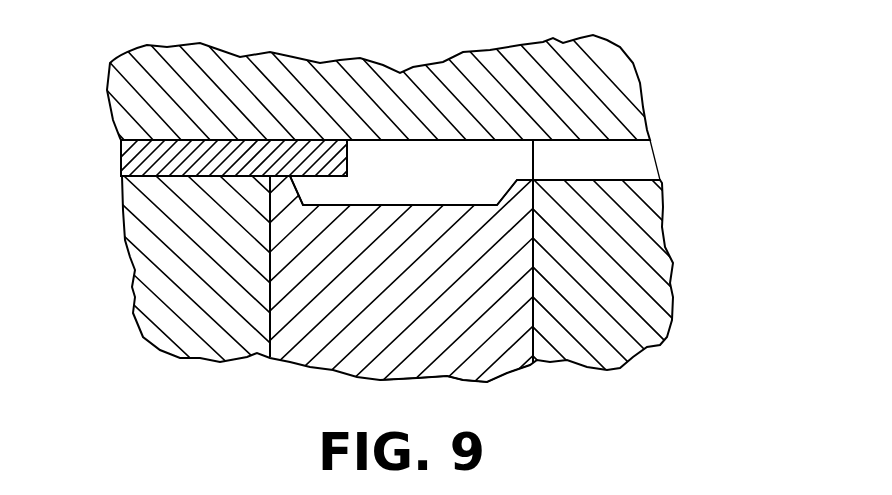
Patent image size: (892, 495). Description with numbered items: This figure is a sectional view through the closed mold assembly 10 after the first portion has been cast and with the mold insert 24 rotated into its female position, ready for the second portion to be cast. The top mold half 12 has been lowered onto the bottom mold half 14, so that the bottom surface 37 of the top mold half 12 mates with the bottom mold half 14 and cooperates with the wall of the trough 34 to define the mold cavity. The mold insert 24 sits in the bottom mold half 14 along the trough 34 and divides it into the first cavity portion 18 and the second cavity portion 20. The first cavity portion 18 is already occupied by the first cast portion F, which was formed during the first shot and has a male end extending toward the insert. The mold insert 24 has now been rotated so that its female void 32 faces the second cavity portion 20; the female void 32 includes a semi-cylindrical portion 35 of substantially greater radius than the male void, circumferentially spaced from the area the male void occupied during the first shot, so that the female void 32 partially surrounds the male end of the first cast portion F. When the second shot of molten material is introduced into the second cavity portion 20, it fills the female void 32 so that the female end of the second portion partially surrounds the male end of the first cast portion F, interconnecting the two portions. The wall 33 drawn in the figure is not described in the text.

The mold assembly 10 is at (753, 77).
The top mold half 12 is at (320, 63).
The bottom mold half 14 is at (133, 314).
The first cavity portion 18 is at (130, 157).
The second cavity portion 20 is at (640, 170).
The mold insert 24 is at (418, 380).
The female void 32 is at (402, 155).
The inclined wall 33 is at (322, 192).
The trough 34 is at (613, 190).
The semi-cylindrical portion 35 is at (458, 187).
The bottom surface 37 is at (600, 157).
The first cast portion F is at (205, 177).